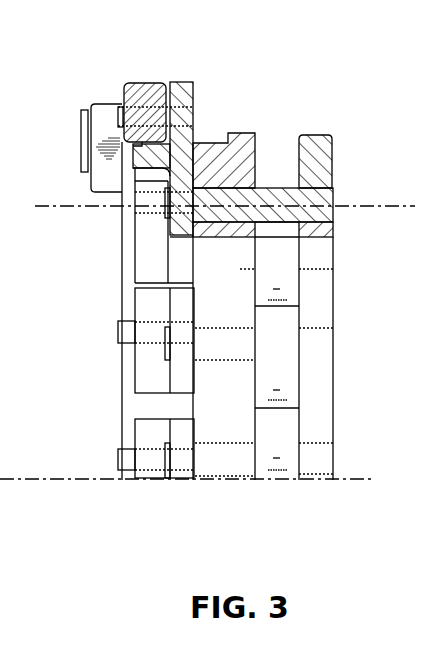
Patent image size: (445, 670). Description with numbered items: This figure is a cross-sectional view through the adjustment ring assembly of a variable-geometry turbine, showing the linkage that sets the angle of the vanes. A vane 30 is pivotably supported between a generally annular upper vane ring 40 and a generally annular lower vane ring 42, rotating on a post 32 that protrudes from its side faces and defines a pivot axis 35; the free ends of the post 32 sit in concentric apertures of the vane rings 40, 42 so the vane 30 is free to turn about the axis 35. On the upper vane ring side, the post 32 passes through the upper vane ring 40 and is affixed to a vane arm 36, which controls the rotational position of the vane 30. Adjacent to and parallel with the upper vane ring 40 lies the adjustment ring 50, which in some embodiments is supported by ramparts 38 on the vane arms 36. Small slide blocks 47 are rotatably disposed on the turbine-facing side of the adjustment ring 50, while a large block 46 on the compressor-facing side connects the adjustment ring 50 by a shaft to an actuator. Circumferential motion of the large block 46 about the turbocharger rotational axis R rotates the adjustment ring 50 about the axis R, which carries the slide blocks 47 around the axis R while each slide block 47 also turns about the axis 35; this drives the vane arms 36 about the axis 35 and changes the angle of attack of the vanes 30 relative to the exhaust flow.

The vane 30 is at (280, 260).
The post 32 is at (278, 200).
The pivot axis 35 is at (353, 200).
The vane arm 36 is at (177, 87).
The rampart 38 is at (136, 160).
The upper vane ring 40 is at (210, 152).
The lower vane ring 42 is at (310, 143).
The large block 46 is at (108, 108).
The slide block 47 is at (178, 437).
The adjustment ring 50 is at (148, 92).
The turbocharger rotational axis R is at (341, 478).